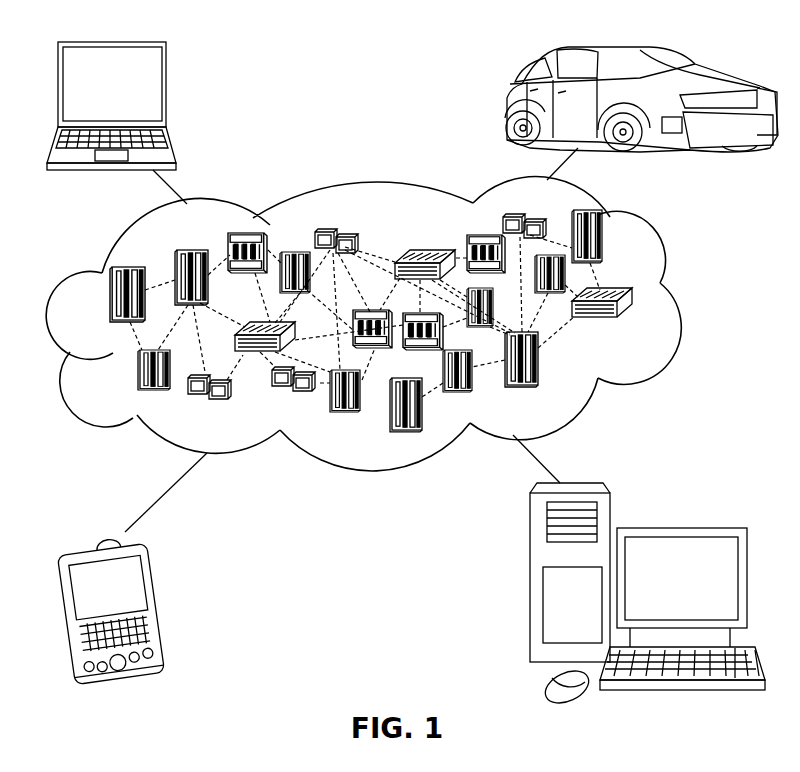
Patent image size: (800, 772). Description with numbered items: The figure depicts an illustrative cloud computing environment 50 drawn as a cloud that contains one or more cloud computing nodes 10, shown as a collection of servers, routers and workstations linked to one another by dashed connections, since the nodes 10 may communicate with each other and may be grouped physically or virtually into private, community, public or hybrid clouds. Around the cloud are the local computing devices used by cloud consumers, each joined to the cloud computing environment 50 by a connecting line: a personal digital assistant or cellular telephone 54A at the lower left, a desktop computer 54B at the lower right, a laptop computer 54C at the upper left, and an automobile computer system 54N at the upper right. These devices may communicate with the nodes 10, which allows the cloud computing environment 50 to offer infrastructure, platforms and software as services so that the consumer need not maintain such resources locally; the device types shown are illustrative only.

The cloud computing node 10 is at (636, 323).
The cloud computing environment 50 is at (384, 324).
The personal digital assistant or cellular telephone 54A is at (158, 603).
The desktop computer 54B is at (678, 527).
The laptop computer 54C is at (166, 92).
The automobile computer system 54N is at (508, 104).